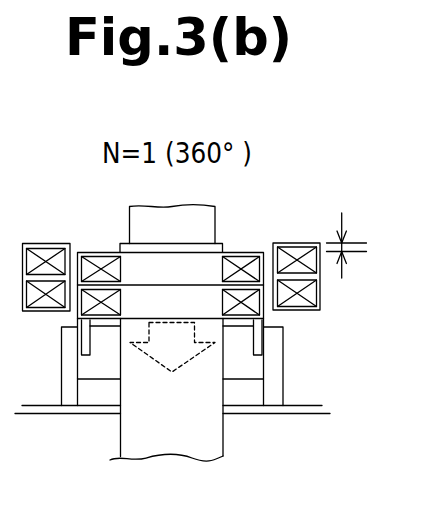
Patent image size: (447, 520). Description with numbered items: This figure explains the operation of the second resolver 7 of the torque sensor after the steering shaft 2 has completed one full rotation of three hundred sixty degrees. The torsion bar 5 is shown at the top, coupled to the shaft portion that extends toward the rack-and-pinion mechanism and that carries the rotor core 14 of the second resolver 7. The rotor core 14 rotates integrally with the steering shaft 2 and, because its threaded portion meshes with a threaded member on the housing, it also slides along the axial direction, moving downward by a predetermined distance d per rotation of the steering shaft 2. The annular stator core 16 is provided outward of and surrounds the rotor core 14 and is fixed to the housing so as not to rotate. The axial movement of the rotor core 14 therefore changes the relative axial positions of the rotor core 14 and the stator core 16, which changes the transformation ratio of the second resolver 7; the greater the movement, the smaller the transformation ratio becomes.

The steering shaft 2 is at (223, 433).
The torsion bar 5 is at (135, 220).
The second resolver 7 is at (192, 218).
The rotor core 14 is at (245, 252).
The stator core 16 is at (292, 243).
The predetermined distance d is at (352, 247).